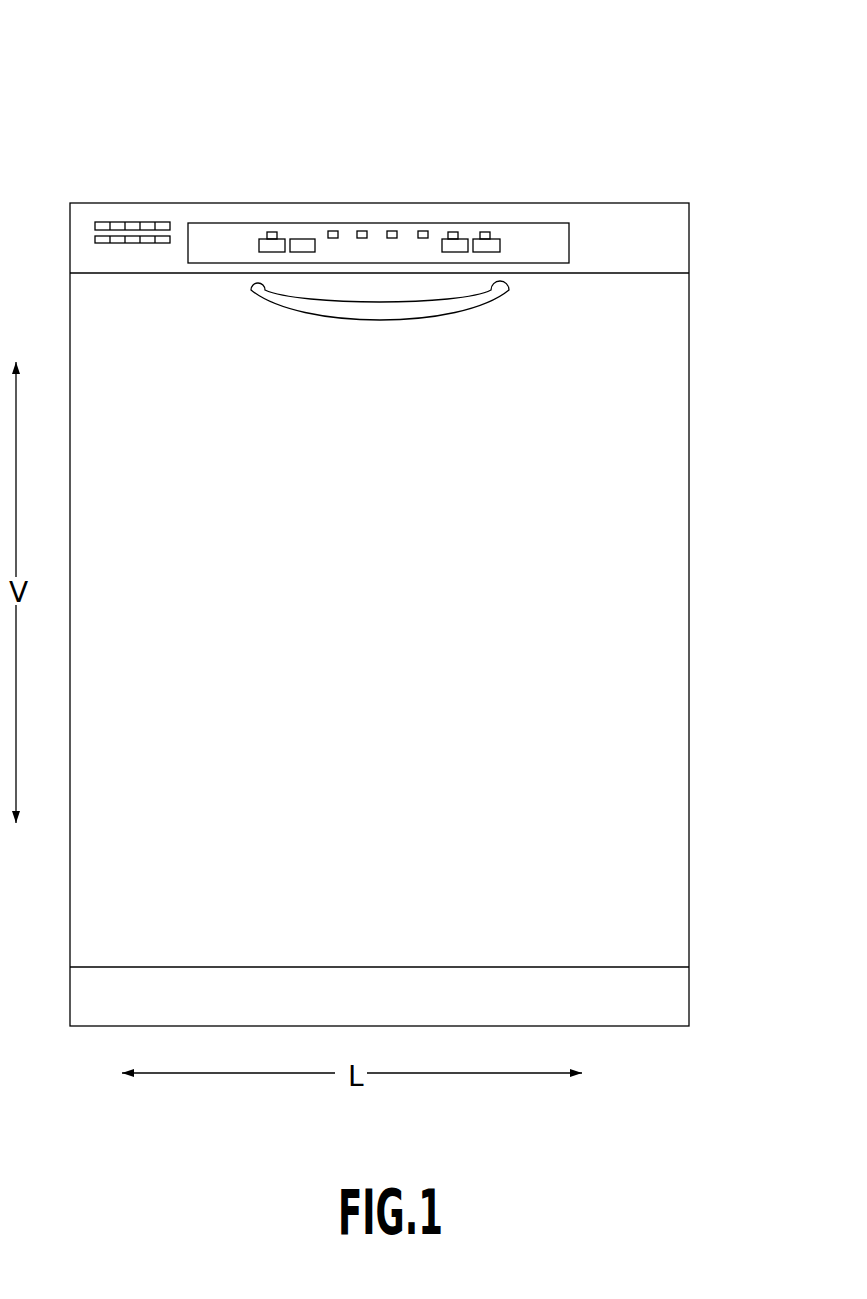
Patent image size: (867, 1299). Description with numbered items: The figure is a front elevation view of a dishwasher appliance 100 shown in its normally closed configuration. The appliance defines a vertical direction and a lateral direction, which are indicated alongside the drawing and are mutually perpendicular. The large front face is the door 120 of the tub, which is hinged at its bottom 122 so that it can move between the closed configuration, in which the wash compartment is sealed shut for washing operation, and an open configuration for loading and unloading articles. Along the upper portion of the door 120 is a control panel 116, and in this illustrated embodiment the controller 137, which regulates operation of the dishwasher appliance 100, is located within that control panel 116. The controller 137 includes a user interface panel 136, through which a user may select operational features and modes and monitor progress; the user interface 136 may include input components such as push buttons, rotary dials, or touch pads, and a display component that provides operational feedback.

The dishwasher appliance 100 is at (126, 110).
The control panel 116 is at (633, 222).
The door 120 is at (652, 494).
The bottom 122 is at (696, 965).
The user interface panel 136 is at (302, 245).
The controller 137 is at (408, 232).